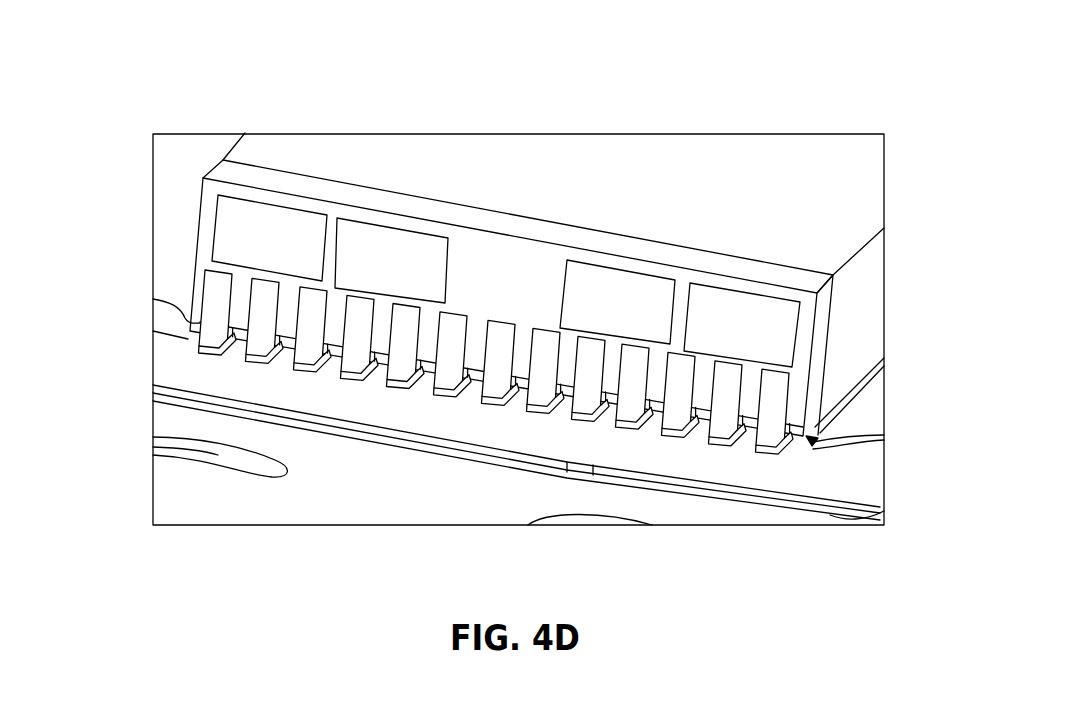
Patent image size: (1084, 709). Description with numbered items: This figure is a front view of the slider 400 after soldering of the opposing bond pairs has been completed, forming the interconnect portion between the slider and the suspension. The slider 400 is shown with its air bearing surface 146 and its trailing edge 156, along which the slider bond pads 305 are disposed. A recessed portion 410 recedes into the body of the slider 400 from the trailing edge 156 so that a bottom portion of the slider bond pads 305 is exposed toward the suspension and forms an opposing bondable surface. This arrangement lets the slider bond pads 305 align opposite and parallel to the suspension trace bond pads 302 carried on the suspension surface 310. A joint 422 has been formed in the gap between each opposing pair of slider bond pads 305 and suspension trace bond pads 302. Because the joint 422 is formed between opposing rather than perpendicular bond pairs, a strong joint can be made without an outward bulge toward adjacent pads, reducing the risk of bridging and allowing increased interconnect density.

The slider 400 is at (808, 116).
The air bearing surface 146 is at (537, 257).
The trailing edge 156 is at (500, 258).
The slider bond pads 305 is at (423, 384).
The joint 422 is at (443, 378).
The suspension trace bond pads 302 is at (190, 342).
The suspension surface 310 is at (737, 484).
The recessed portion 410 is at (814, 442).